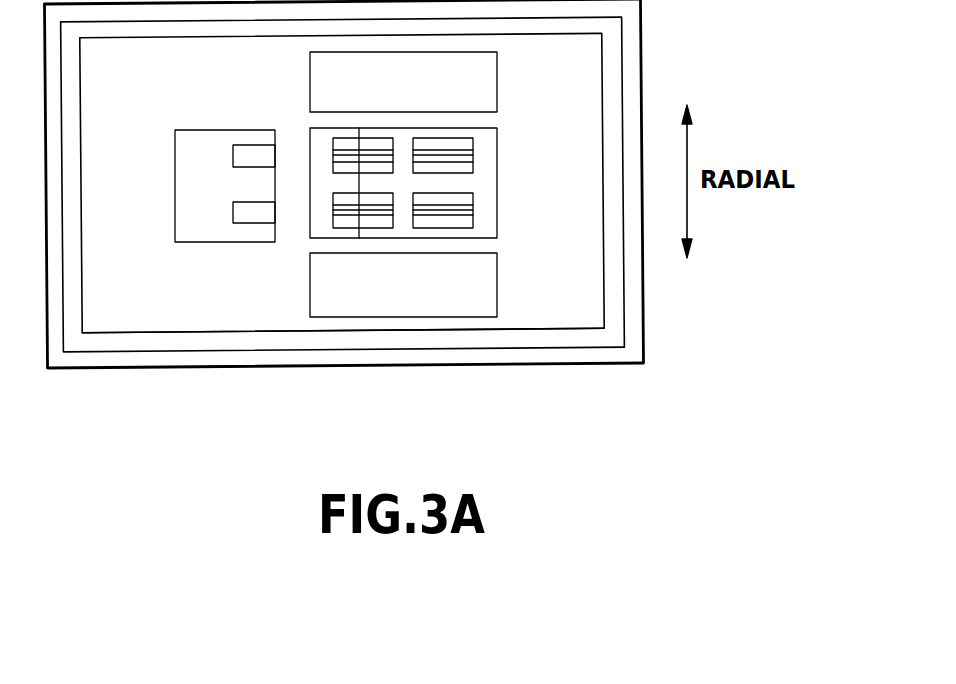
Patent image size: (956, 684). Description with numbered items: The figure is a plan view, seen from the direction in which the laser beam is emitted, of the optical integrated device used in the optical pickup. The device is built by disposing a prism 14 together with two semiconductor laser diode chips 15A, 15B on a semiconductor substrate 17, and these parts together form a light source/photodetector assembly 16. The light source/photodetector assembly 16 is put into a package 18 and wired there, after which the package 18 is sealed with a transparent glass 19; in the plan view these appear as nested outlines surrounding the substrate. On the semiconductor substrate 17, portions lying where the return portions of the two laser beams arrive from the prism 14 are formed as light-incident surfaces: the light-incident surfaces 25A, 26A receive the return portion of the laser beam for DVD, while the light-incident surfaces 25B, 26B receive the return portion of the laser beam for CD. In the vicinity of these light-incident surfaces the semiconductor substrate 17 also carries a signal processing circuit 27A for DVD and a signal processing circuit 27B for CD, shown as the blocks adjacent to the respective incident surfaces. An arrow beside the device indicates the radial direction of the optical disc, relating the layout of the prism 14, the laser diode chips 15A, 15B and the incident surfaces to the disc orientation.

The prism 14 is at (325, 223).
The semiconductor laser diode chip 15A is at (245, 215).
The semiconductor laser diode chip 15B is at (243, 157).
The light source/photodetector assembly 16 is at (523, 175).
The semiconductor substrate 17 is at (220, 320).
The package 18 is at (147, 342).
The transparent glass 19 is at (273, 318).
The light-incident surface for DVD 25A is at (378, 223).
The light-incident surface for CD 25B is at (377, 142).
The light-incident surface for DVD 26A is at (450, 223).
The light-incident surface for CD 26B is at (448, 142).
The signal processing circuit for DVD 27A is at (493, 285).
The signal processing circuit for CD 27B is at (493, 95).